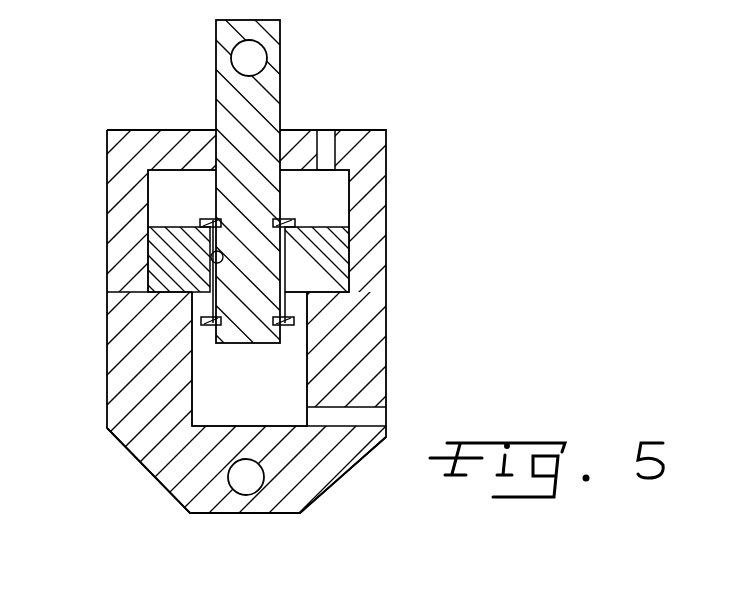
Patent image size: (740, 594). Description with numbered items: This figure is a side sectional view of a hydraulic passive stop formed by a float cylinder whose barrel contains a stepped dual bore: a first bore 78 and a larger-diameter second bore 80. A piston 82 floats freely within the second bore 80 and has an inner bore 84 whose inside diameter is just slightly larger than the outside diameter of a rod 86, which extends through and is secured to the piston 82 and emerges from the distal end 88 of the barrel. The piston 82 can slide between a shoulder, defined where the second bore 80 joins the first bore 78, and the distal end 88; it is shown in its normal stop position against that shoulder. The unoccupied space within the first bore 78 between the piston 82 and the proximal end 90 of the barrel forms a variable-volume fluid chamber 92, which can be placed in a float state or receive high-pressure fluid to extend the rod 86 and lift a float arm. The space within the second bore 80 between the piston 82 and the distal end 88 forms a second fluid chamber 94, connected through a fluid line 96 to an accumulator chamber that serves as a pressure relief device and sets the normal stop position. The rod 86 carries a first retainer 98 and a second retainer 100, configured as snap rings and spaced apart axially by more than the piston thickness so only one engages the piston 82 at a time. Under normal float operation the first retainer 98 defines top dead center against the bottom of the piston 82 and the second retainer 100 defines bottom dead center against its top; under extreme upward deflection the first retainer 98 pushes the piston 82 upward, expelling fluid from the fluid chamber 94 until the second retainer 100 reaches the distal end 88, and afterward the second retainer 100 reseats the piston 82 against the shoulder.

The first bore 78 is at (192, 333).
The second bore 80 is at (148, 198).
The piston 82 is at (334, 267).
The inner bore 84 is at (148, 247).
The rod 86 is at (281, 86).
The distal end 88 is at (149, 130).
The proximal end 90 is at (154, 479).
The fluid chamber 92 is at (293, 346).
The fluid chamber 94 is at (323, 197).
The fluid line 96 is at (327, 140).
The first retainer 98 is at (208, 317).
The second retainer 100 is at (204, 219).